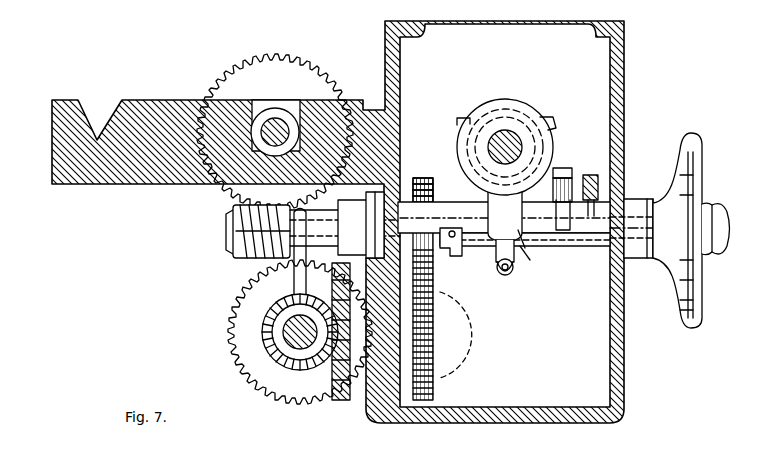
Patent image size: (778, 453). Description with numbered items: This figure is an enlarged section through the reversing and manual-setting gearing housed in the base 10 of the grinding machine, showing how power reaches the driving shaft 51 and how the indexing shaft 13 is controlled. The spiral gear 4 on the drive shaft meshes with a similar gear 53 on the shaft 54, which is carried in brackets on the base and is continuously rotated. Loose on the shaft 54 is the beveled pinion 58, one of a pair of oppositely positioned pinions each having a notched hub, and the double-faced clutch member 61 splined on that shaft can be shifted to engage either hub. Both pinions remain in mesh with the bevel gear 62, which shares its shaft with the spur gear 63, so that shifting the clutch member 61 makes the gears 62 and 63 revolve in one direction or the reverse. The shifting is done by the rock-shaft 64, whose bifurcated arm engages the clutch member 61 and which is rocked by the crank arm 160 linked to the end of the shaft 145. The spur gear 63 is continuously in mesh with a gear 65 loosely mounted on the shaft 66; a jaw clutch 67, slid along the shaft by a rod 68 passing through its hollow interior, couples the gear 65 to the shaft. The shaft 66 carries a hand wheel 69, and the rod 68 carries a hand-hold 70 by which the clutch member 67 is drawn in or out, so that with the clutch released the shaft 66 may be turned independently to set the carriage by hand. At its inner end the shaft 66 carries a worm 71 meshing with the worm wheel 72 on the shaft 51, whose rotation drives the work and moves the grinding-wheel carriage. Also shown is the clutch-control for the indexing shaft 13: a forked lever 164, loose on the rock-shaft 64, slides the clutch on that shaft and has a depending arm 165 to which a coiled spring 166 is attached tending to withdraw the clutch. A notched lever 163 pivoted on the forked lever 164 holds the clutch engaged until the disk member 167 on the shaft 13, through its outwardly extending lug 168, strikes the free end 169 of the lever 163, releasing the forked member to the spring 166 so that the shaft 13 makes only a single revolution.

The spiral gear 4 is at (457, 328).
The base 10 is at (612, 52).
The indexing shaft 13 is at (508, 134).
The driving shaft 51 is at (262, 143).
The gear 53 is at (247, 342).
The shaft 54 is at (268, 330).
The beveled pinion 58 is at (268, 350).
The double-faced clutch member 61 is at (262, 307).
The bevel gear 62 is at (339, 401).
The spur gear 63 is at (435, 384).
The rock-shaft 64 is at (240, 238).
The gear 65 is at (426, 178).
The shaft 66 is at (523, 240).
The jaw clutch 67 is at (451, 257).
The rod 68 is at (526, 252).
The hand wheel 69 is at (688, 137).
The hand-hold 70 is at (716, 213).
The worm 71 is at (236, 218).
The worm wheel 72 is at (243, 62).
The shaft 145 is at (592, 247).
The crank arm 160 is at (591, 176).
The lever 163 is at (564, 168).
The forked lever 164 is at (462, 117).
The depending arm 165 is at (499, 248).
The coiled spring 166 is at (511, 276).
The disk member 167 is at (490, 104).
The arm or lug 168 is at (560, 119).
The free end 169 is at (566, 178).